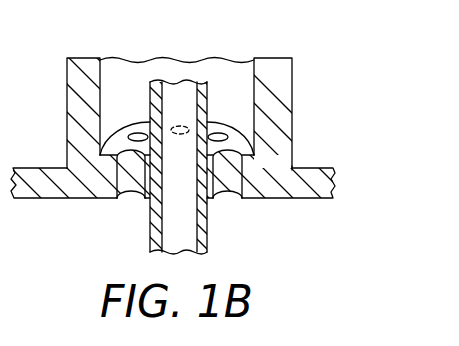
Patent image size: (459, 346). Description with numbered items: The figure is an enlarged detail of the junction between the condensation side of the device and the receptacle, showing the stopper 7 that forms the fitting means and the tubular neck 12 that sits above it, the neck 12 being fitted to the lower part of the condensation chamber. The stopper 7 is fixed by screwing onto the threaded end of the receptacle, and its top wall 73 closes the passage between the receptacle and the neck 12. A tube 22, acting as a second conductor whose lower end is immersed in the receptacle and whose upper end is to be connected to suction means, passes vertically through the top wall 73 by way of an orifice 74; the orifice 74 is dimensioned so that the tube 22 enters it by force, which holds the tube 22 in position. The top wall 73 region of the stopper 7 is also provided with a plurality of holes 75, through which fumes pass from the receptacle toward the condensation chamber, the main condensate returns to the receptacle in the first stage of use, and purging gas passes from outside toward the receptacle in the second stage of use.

The stopper 7 is at (327, 185).
The tubular neck 12 is at (287, 97).
The tube 22 is at (207, 90).
The top wall 73 is at (313, 168).
The orifice 74 is at (212, 190).
The holes 75 is at (127, 185).